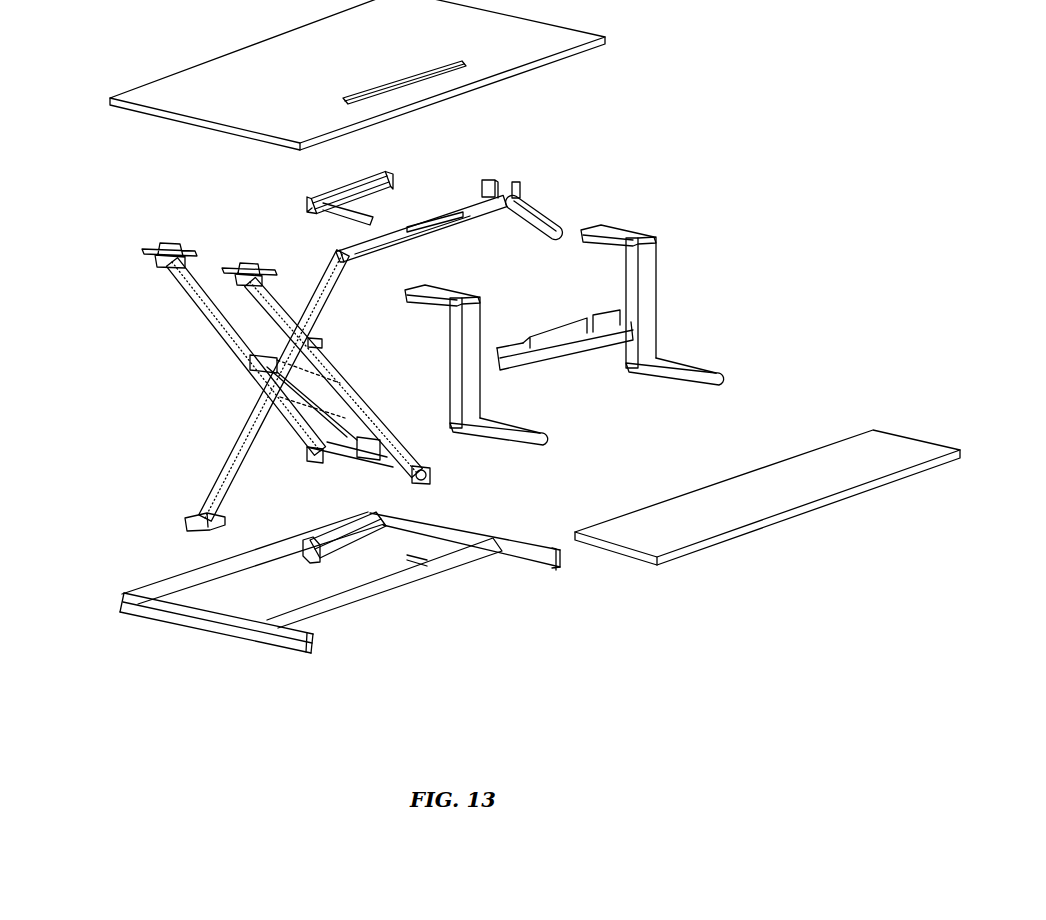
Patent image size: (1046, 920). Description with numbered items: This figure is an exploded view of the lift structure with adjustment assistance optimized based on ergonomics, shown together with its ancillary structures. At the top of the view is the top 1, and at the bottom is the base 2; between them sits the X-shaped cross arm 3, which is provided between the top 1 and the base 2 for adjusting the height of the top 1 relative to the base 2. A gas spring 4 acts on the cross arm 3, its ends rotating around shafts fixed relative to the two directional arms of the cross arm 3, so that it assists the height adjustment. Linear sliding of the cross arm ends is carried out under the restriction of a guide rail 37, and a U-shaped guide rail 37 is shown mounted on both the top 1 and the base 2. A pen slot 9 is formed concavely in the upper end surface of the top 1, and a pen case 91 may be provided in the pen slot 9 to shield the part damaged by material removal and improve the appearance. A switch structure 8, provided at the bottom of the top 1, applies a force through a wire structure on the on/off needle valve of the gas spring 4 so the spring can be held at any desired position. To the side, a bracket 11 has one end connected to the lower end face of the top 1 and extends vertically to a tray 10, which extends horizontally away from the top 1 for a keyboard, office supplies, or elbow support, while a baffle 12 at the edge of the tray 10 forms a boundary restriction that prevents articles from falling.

The top 1 is at (540, 42).
The pen slot 9 is at (410, 80).
The guide rail 37 is at (315, 193).
The pen case 91 is at (393, 245).
The switch structure 8 is at (538, 205).
The X-shaped cross arm 3 is at (195, 296).
The gas spring 4 is at (272, 394).
The bracket 11 is at (677, 365).
The baffle 12 is at (580, 350).
The tray 10 is at (752, 512).
The base 2 is at (175, 582).